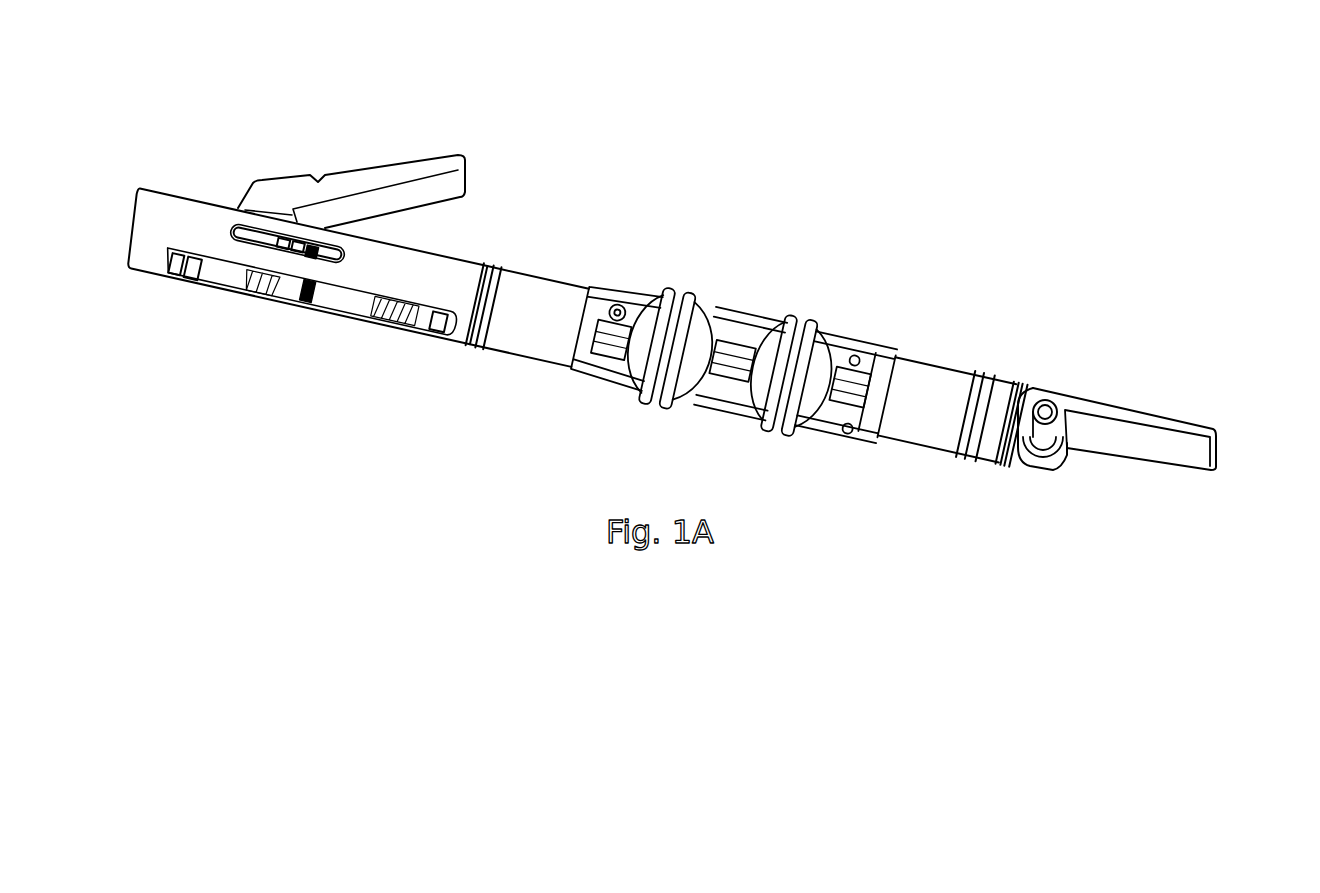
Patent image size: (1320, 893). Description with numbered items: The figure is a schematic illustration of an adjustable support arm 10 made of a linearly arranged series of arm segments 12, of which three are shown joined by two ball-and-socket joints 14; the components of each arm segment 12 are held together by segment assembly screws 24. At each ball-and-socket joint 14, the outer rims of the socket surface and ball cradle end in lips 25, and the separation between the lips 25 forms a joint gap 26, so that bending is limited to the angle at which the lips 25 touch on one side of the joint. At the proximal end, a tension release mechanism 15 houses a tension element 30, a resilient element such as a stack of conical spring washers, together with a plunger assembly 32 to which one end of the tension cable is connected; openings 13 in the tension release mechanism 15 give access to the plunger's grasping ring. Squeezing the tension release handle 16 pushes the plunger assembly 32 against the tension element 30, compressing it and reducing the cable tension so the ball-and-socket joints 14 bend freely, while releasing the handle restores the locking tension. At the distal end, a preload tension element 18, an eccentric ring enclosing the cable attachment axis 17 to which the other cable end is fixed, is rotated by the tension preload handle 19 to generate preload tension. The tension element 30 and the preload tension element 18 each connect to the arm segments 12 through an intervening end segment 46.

The adjustable support arm 10 is at (701, 279).
The arm segment 12 is at (602, 373).
The openings 13 is at (210, 275).
The ball-and-socket joint 14 is at (730, 373).
The tension release mechanism 15 is at (290, 241).
The tension release handle 16 is at (362, 172).
The cable attachment axis 17 is at (1053, 440).
The preload tension element 18 is at (1053, 465).
The tension preload handle 19 is at (1218, 436).
The segment assembly screw 24 is at (620, 300).
The lip 25 is at (675, 412).
The joint gap 26 is at (790, 440).
The tension element 30 is at (397, 313).
The plunger assembly 32 is at (323, 295).
The end segment 46 is at (527, 340).